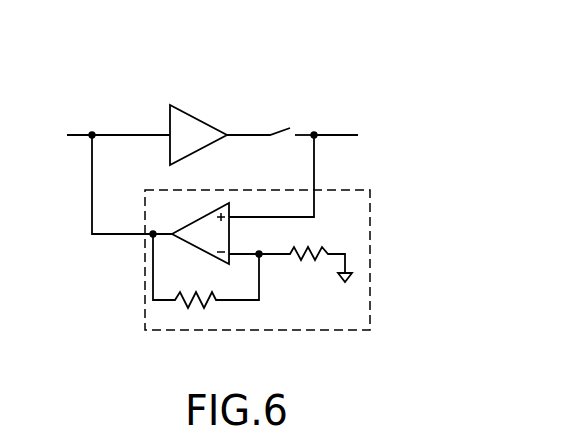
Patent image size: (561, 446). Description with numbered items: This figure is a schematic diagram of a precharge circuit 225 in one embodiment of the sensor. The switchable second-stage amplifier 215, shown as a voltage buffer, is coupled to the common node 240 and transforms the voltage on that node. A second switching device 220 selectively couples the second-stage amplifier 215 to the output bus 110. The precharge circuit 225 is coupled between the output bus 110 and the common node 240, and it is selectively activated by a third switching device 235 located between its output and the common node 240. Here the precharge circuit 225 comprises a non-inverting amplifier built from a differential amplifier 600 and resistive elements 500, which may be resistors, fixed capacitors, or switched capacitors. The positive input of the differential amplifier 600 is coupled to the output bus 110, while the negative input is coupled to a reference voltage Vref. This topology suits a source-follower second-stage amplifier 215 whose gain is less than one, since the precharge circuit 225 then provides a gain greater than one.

The common node 240 is at (92, 134).
The switchable second-stage amplifier 215 is at (194, 117).
The second switching device 220 is at (288, 128).
The output bus 110 is at (365, 134).
The third switching device 235 is at (137, 231).
The differential amplifier 600 is at (188, 228).
The precharge circuit 225 is at (370, 236).
The resistive elements 500 is at (188, 306).